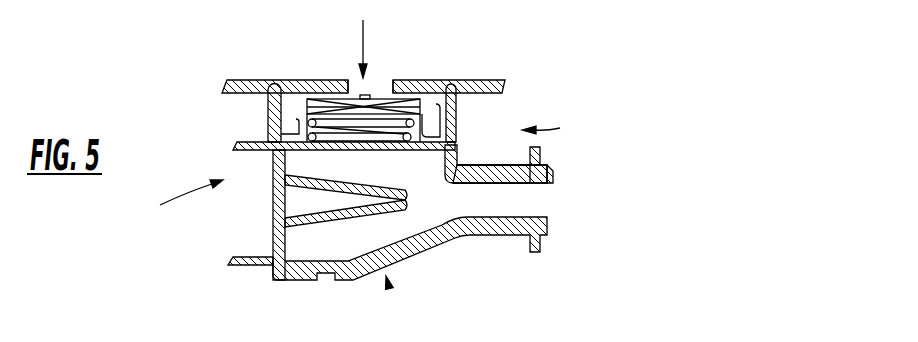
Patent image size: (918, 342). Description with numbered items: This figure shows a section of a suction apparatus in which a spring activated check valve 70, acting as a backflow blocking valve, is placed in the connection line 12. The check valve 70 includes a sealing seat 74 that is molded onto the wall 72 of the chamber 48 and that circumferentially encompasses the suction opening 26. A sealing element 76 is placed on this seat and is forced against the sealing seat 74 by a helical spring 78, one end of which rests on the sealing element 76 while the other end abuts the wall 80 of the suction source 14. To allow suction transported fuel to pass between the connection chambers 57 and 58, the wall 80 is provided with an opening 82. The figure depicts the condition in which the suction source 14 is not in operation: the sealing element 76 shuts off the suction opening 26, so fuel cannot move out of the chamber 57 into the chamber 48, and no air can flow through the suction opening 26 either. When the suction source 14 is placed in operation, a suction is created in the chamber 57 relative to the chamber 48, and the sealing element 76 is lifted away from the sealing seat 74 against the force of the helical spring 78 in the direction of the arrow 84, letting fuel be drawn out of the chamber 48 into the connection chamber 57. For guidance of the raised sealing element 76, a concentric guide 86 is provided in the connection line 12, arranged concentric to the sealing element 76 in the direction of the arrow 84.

The connection line 12 is at (561, 126).
The suction source 14 is at (389, 288).
The suction opening 26 is at (347, 85).
The chamber 48 is at (433, 63).
The connection chamber 57 is at (460, 200).
The connection chamber 58 is at (303, 203).
The check valve 70 is at (175, 200).
The wall of the chamber 72 is at (283, 85).
The sealing seat 74 is at (410, 97).
The sealing element 76 is at (453, 114).
The helical spring 78 is at (403, 145).
The wall of the suction source 80 is at (273, 167).
The opening 82 is at (275, 199).
The arrow 84 is at (358, 43).
The concentric guide 86 is at (278, 122).